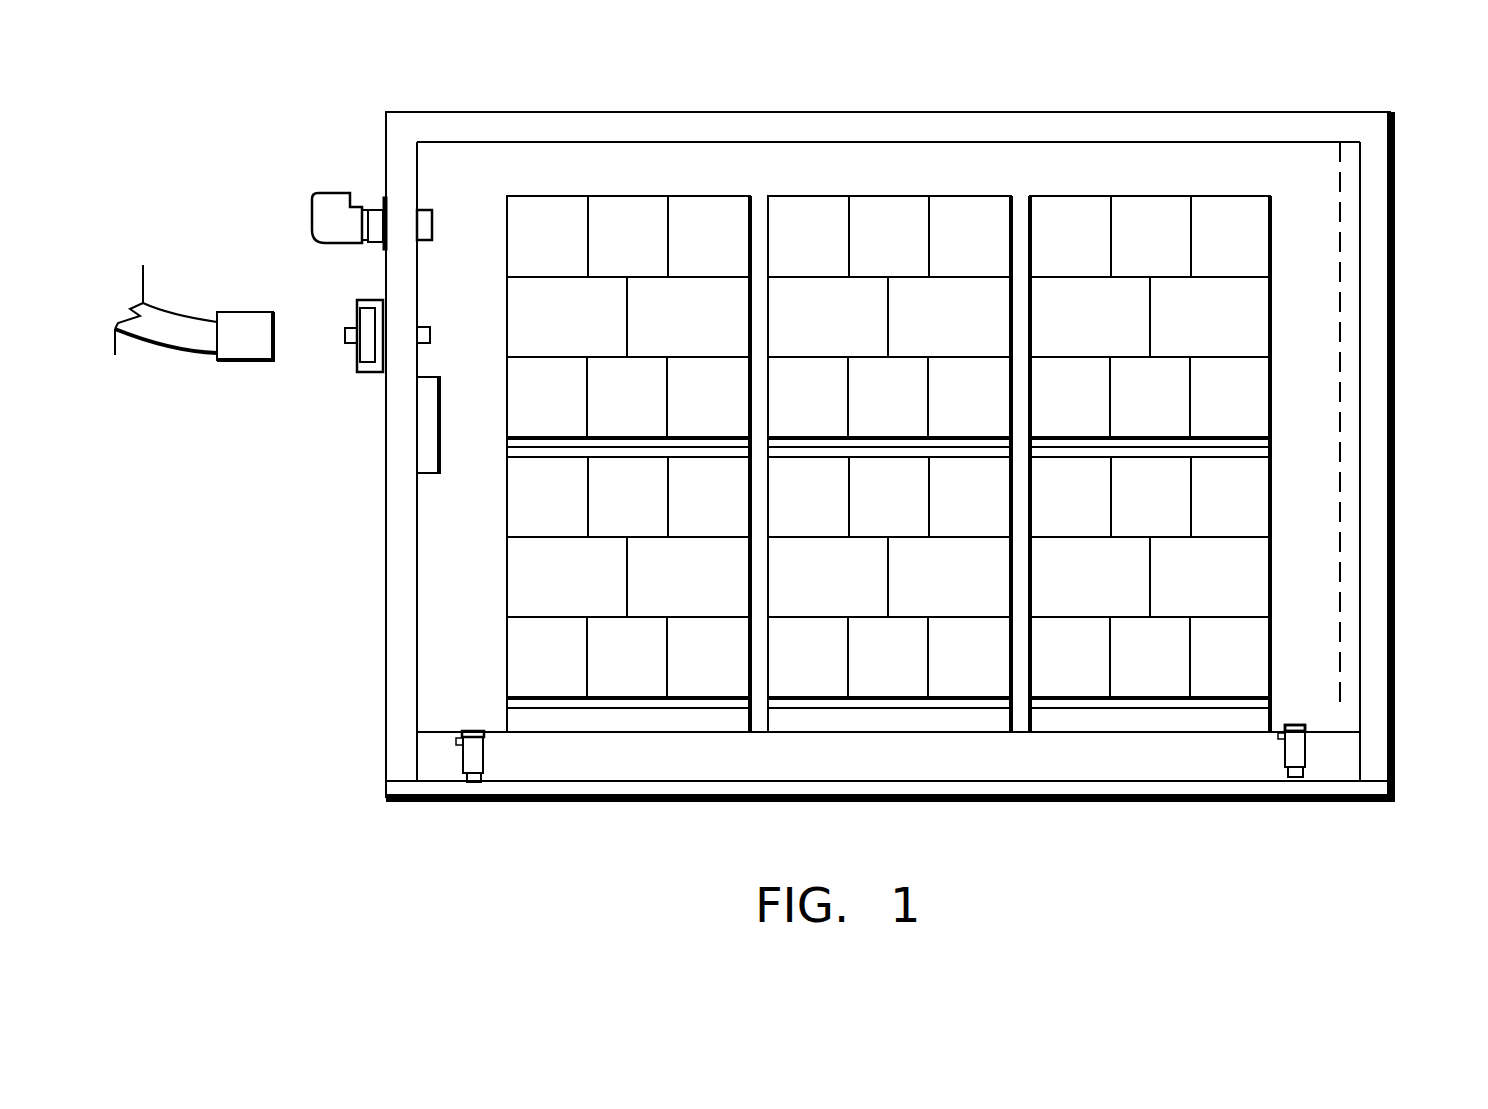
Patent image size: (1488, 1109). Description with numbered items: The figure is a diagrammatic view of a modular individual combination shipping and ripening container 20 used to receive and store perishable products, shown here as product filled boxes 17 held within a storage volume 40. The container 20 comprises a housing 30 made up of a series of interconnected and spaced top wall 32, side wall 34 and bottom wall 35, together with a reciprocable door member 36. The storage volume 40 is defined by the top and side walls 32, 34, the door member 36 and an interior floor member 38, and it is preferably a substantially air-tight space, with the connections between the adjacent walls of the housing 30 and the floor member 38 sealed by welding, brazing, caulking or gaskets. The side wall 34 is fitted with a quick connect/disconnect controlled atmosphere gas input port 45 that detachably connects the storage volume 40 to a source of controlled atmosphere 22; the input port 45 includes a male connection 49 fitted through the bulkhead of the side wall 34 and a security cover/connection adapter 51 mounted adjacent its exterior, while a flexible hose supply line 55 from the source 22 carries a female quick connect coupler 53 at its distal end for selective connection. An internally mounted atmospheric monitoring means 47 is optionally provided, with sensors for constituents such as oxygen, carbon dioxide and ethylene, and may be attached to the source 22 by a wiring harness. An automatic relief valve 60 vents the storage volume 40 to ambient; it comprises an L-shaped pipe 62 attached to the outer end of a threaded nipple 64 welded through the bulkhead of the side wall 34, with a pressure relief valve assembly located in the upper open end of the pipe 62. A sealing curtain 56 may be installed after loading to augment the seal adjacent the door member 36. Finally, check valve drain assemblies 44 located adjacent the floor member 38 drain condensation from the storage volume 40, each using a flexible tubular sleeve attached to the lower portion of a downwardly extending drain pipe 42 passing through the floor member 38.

The product filled boxes 17 is at (962, 235).
The combination shipping and ripening container 20 is at (450, 850).
The source of controlled atmosphere 22 is at (194, 379).
The housing 30 is at (1395, 460).
The top wall 32 is at (827, 113).
The side wall 34 is at (395, 623).
The bottom wall 35 is at (940, 802).
The door member 36 is at (1377, 367).
The interior floor member 38 is at (1342, 728).
The storage volume 40 is at (895, 391).
The drain pipe 42 is at (1297, 725).
The check valve drain assembly 44 is at (497, 770).
The controlled atmosphere gas input port 45 is at (352, 355).
The atmospheric monitoring means 47 is at (425, 427).
The male connection 49 is at (353, 346).
The security cover/connection adapter 51 is at (373, 375).
The female quick connect coupler 53 is at (257, 352).
The flexible hose supply line 55 is at (172, 328).
The sealing curtain 56 is at (1343, 237).
The automatic relief valve 60 is at (395, 153).
The L-shaped pipe 62 is at (322, 218).
The threaded nipple 64 is at (390, 218).